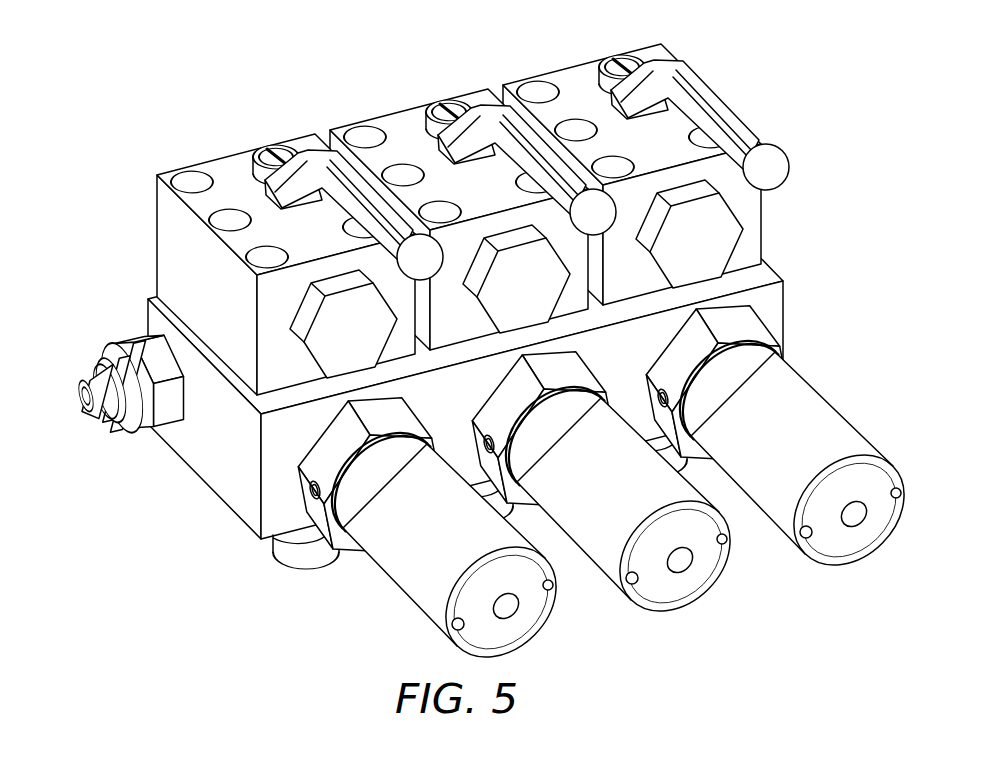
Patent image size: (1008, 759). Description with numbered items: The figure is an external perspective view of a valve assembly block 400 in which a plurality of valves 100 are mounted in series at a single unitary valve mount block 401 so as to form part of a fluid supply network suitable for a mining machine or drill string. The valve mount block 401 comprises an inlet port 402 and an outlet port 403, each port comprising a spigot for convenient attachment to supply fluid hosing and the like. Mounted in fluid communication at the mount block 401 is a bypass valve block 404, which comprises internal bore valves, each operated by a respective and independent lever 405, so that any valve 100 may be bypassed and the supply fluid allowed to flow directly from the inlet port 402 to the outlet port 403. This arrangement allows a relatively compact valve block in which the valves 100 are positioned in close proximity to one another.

The valve 100 is at (841, 403).
The valve assembly block 400 is at (472, 361).
The valve mount block 401 is at (220, 478).
The inlet port 402 is at (83, 402).
The outlet port 403 is at (326, 565).
The bypass valve block 404 is at (157, 247).
The lever 405 is at (731, 121).